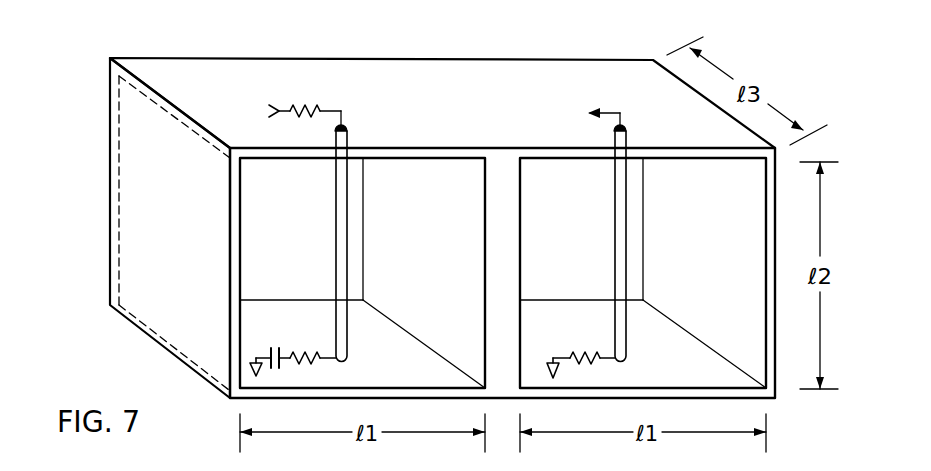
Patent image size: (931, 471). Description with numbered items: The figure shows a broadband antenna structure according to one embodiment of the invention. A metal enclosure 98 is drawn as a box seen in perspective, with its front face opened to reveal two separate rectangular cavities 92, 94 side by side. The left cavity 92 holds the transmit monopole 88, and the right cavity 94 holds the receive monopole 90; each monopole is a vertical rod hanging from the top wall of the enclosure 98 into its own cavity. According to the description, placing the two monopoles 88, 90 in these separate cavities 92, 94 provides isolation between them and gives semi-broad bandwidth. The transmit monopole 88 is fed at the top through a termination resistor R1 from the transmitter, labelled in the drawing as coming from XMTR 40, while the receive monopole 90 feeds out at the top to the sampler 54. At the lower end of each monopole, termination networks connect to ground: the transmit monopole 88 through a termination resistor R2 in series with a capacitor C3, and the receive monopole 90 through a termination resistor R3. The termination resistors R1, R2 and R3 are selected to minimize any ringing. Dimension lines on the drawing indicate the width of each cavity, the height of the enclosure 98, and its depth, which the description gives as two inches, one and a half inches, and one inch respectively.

The metal enclosure 98 is at (170, 53).
The rectangular cavity 92 is at (265, 208).
The rectangular cavity 94 is at (743, 318).
The transmit monopole 88 is at (342, 257).
The receive monopole 90 is at (618, 233).
The transmitter (input from XMTR) 40 is at (236, 94).
The sampler (output to sampler) 54 is at (545, 114).
The termination resistor R1 is at (311, 103).
The termination resistor R2 is at (311, 351).
The termination resistor R3 is at (582, 352).
The capacitor C3 is at (270, 350).